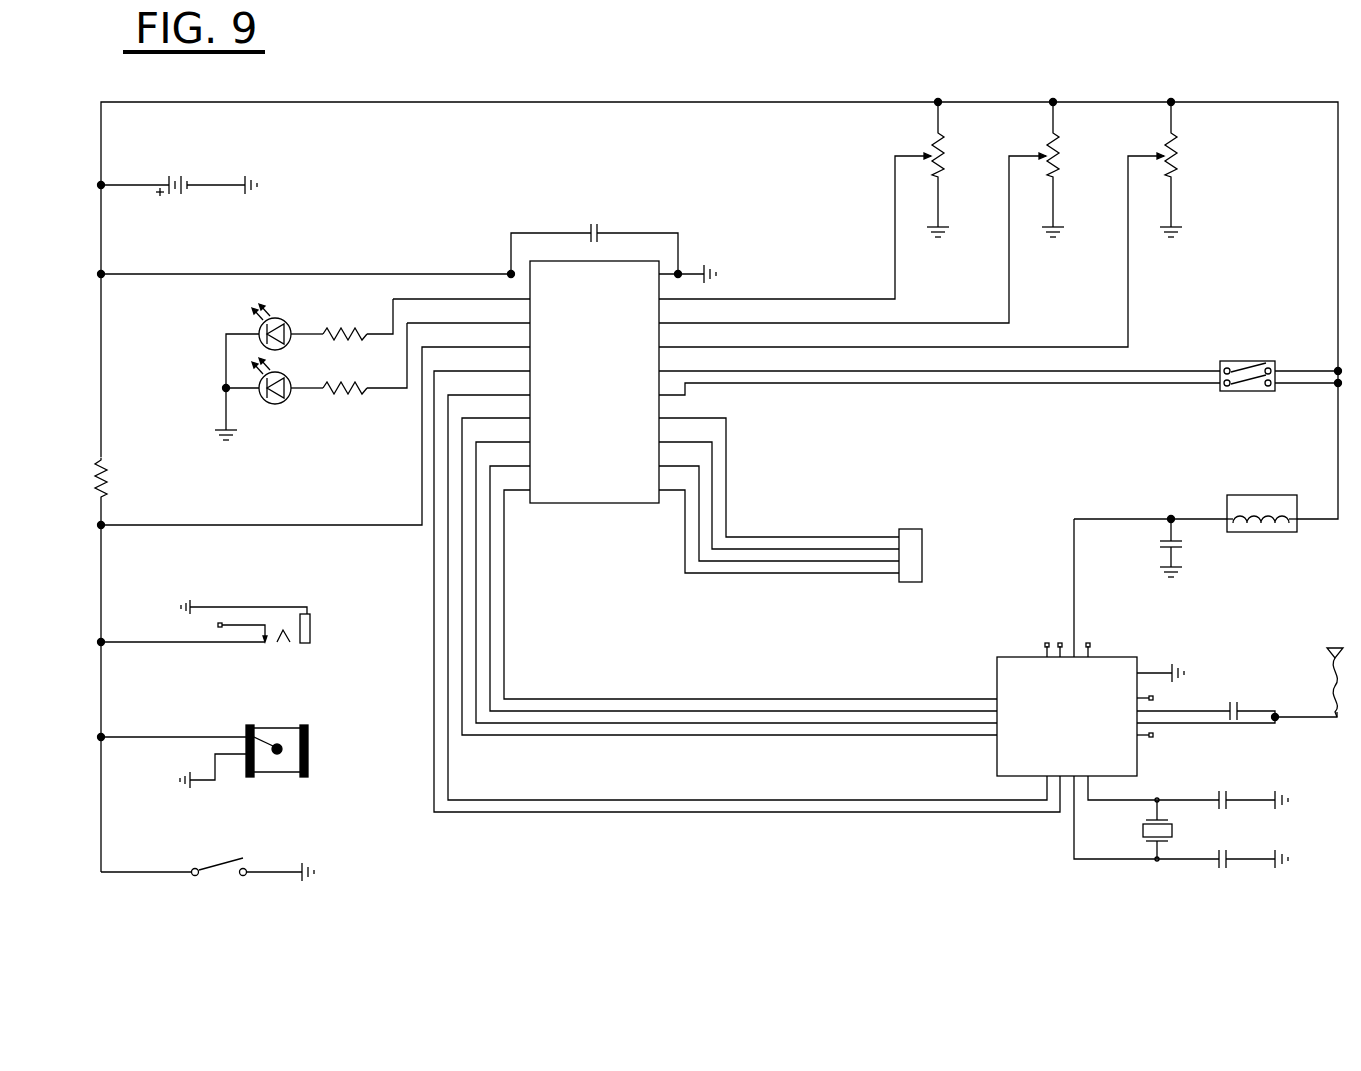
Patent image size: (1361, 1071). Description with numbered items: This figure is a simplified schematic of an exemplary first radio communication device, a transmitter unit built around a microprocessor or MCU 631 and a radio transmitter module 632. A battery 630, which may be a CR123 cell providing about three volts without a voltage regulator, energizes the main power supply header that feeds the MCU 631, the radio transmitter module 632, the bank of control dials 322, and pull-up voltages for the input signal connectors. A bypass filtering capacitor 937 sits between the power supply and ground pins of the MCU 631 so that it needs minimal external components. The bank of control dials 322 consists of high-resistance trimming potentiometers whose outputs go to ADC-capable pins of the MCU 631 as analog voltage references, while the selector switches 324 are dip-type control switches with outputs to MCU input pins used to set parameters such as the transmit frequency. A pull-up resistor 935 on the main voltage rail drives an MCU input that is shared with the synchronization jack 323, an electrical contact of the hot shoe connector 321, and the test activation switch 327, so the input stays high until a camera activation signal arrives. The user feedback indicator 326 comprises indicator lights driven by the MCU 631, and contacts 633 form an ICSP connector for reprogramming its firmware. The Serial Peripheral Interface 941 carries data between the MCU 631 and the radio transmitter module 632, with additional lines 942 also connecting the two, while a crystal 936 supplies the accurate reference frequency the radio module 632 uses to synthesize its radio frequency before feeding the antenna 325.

The battery 630 is at (191, 198).
The bypass filtering capacitor 937 is at (595, 237).
The microprocessor (MCU) 631 is at (594, 396).
The bank of control dials 322 is at (924, 207).
The user feedback indicator 326 is at (372, 369).
The pull-up resistor 935 is at (125, 477).
The selector switches (bank of control switches) 324 is at (1000, 366).
The contacts (ICSP connector) 633 is at (805, 500).
The synchronization connector (jack) 323 is at (230, 618).
The hot shoe connector 321 is at (230, 747).
The user input means (test activation switch) 327 is at (207, 860).
The Serial Peripheral Interface (SPI) 941 is at (729, 576).
The GDO lines 942 is at (747, 605).
The radio transmitter module 632 is at (1090, 701).
The antenna 325 is at (1240, 685).
The crystal 936 is at (1181, 835).